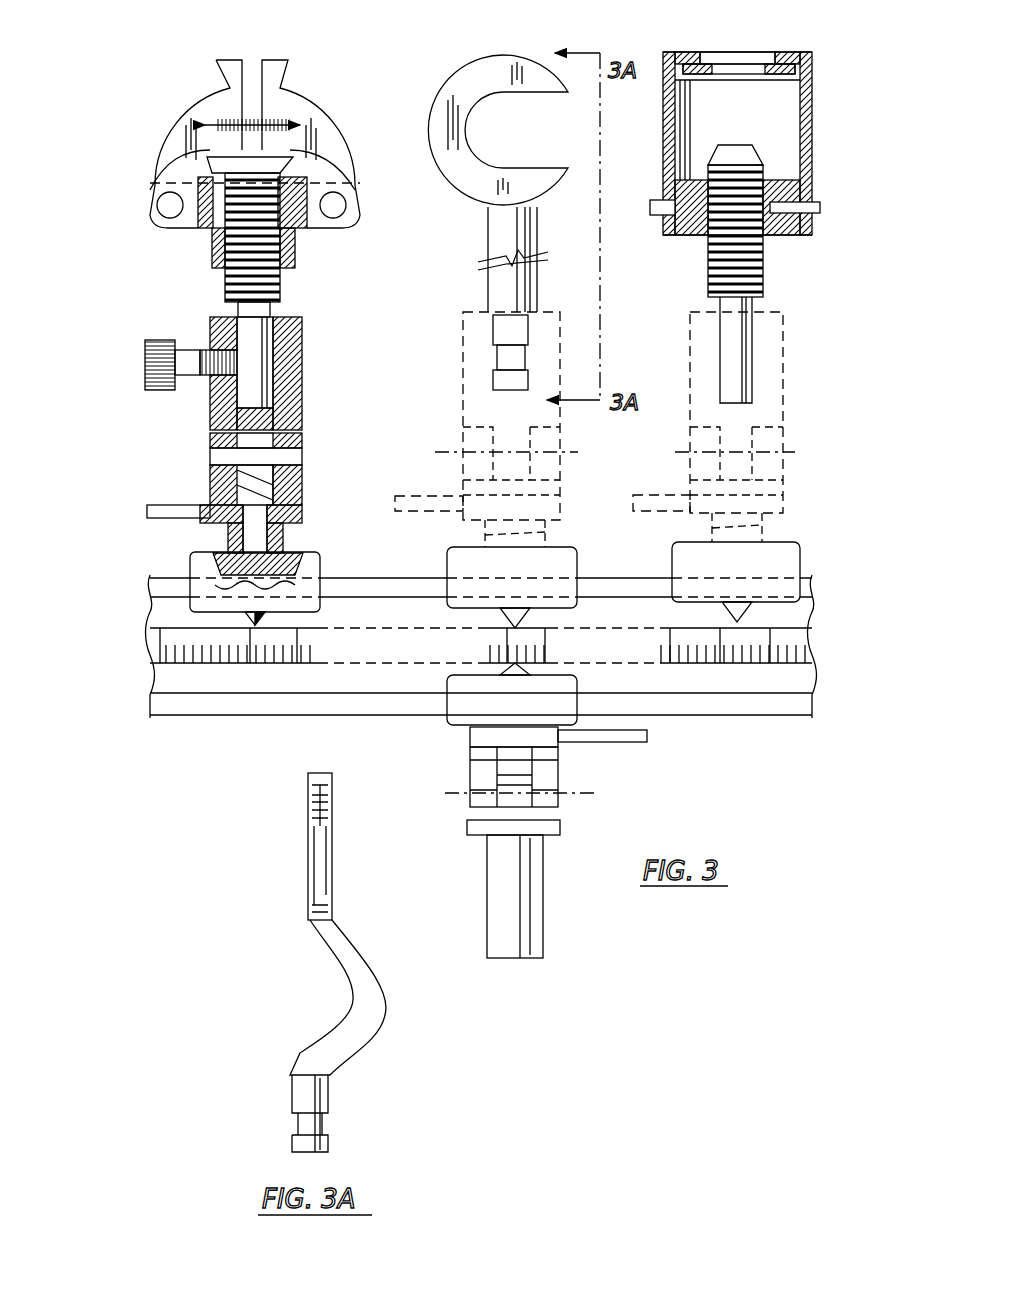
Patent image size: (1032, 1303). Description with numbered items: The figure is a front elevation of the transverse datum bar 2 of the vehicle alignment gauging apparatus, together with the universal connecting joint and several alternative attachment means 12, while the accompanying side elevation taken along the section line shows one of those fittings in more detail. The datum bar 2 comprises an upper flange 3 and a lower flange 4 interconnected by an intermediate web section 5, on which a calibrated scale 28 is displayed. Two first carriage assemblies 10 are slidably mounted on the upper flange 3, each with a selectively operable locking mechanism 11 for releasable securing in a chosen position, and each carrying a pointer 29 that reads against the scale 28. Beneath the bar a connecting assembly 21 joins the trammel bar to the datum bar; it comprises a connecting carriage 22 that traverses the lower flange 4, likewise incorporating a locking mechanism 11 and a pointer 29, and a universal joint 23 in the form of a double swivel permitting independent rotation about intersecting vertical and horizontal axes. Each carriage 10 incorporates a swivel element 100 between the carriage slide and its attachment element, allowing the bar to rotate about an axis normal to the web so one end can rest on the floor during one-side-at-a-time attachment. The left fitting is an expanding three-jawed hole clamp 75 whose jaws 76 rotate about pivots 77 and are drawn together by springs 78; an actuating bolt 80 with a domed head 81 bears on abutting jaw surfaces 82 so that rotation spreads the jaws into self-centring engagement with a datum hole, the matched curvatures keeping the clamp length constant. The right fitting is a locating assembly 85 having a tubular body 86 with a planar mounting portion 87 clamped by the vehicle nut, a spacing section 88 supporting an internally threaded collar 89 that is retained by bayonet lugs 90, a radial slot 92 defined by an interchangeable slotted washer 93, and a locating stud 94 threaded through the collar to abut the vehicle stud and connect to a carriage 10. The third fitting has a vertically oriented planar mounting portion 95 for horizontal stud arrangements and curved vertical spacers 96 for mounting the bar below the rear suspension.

In FIG. 3, the transverse datum bar 2 is at (388, 562).
In FIG. 3, the upper flange 3 is at (150, 580).
In FIG. 3, the lower flange 4 is at (148, 708).
In FIG. 3, the intermediate web section 5 is at (148, 630).
In FIG. 3, the first carriage assembly 10 is at (153, 462).
In FIG. 3, the locking mechanism 11 is at (148, 511).
In FIG. 3, the attachment means 12 is at (128, 124).
In FIG. 3, the connecting assembly 21 is at (612, 786).
In FIG. 3, the connecting carriage 22 is at (447, 724).
In FIG. 3, the universal joint 23 is at (468, 796).
In FIG. 3, the calibrated scale 28 is at (235, 658).
In FIG. 3, the pointer 29 is at (266, 625).
In FIG. 3, the expanding three-jawed hole clamp 75 is at (192, 108).
In FIG. 3, the jaw 76 is at (300, 102).
In FIG. 3, the pivot 77 is at (336, 210).
In FIG. 3, the spring 78 is at (287, 133).
In FIG. 3, the actuating bolt 80 is at (287, 282).
In FIG. 3, the domed head 81 is at (210, 228).
In FIG. 3, the abutting jaw surface 82 is at (160, 190).
In FIG. 3, the locating assembly 85 is at (830, 252).
In FIG. 3, the tubular body 86 is at (812, 120).
In FIG. 3, the mounting portion 87 is at (782, 48).
In FIG. 3, the spacing section 88 is at (813, 168).
In FIG. 3, the internally threaded collar 89 is at (782, 237).
In FIG. 3, the lug 90 is at (822, 207).
In FIG. 3, the slot 92 is at (738, 67).
In FIG. 3, the washer 93 is at (680, 62).
In FIG. 3, the locating stud 94 is at (765, 292).
In FIG. 3, the mounting portion 95 is at (487, 70).
In FIG. 3A, the mounting portion 95 is at (307, 792).
In FIG. 3A, the curved vertical spacer 96 is at (370, 1020).
In FIG. 3, the swivel element 100 is at (302, 452).